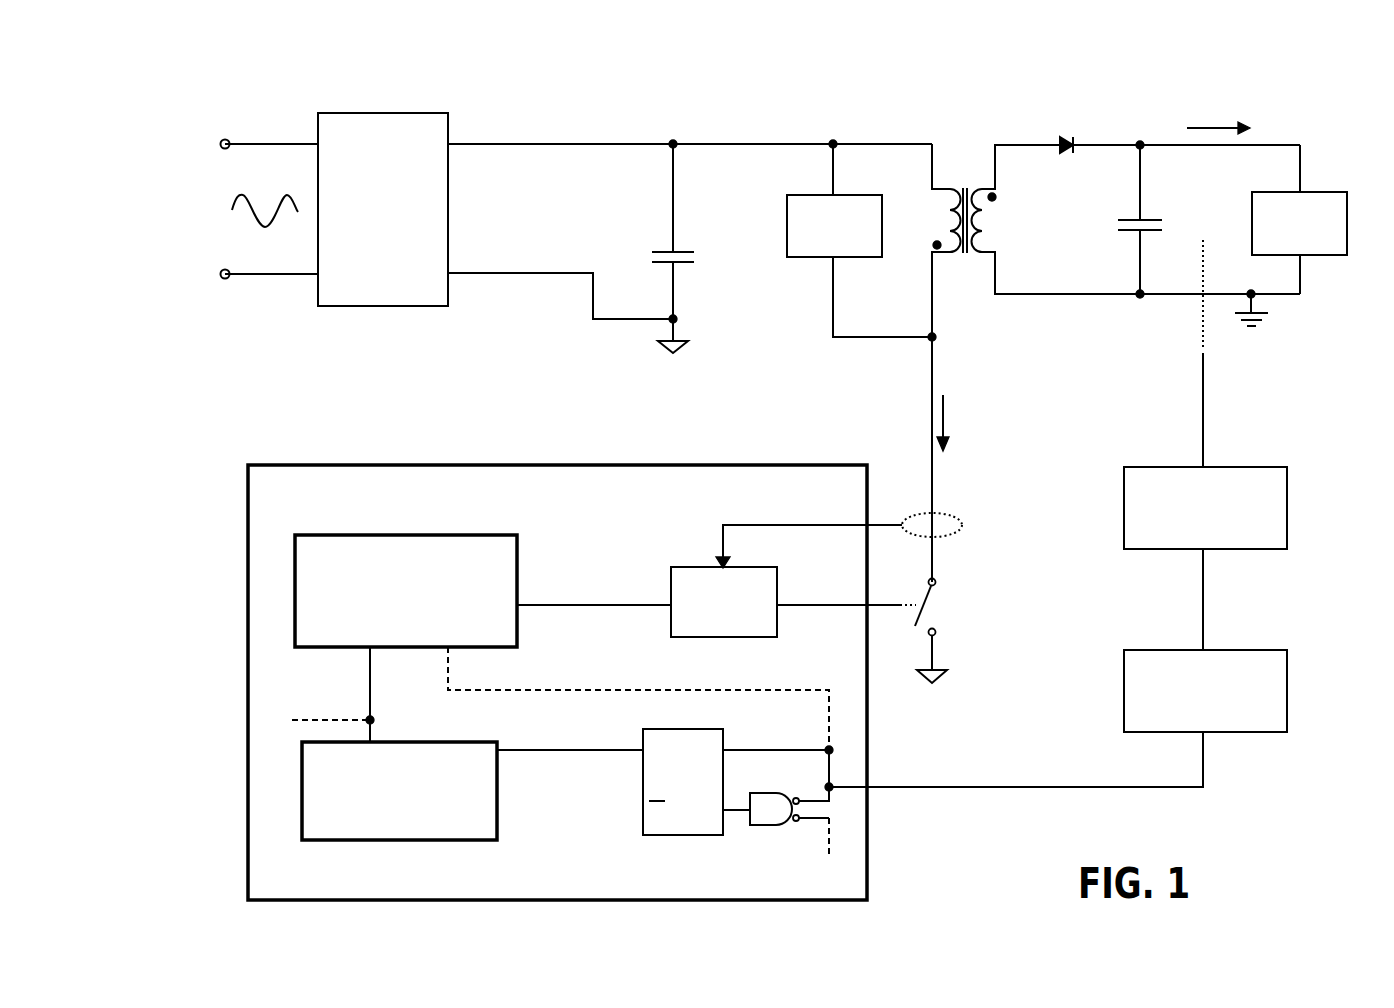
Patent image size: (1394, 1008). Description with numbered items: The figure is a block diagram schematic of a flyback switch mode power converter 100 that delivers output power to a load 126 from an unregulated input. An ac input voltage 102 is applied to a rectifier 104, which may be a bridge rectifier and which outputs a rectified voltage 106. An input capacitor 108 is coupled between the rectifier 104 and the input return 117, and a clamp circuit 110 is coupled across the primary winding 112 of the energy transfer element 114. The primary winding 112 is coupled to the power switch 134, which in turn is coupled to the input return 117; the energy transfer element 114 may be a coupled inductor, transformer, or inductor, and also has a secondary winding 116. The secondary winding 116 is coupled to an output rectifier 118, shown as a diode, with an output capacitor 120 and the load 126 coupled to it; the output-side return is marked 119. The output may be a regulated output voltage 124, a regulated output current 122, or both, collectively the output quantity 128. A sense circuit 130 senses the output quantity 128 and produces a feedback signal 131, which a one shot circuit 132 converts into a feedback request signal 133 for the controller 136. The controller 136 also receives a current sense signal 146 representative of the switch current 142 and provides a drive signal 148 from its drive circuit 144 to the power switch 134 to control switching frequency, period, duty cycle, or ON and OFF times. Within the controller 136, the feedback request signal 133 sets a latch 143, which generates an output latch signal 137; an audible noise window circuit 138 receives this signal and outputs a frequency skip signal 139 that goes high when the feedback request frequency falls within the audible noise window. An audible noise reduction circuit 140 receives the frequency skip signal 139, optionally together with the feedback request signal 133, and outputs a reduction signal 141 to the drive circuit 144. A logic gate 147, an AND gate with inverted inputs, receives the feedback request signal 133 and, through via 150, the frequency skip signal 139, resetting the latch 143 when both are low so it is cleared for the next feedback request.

The power converter 100 is at (847, 57).
The ac input voltage VAC 102 is at (200, 187).
The rectifier 104 is at (363, 105).
The rectified voltage VRECT 106 is at (518, 211).
The input capacitor CIN 108 is at (724, 241).
The clamp circuit 110 is at (850, 265).
The primary winding 112 is at (942, 222).
The energy transfer element T1 114 is at (963, 287).
The secondary winding 116 is at (993, 226).
The input return 117 is at (682, 334).
The rectifier D1 118 is at (1060, 125).
The output return 119 is at (1255, 332).
The output capacitor C1 120 is at (1108, 239).
The output current IO 122 is at (1212, 95).
The output voltage VO 124 is at (1191, 207).
The load 126 is at (1320, 187).
The output quantity UO 128 is at (1163, 398).
The sense circuit 130 is at (1290, 494).
The feedback signal UFB 131 is at (1266, 606).
The one shot circuit 132 is at (1290, 675).
The feedback request signal UFBR 133 is at (1034, 776).
The power switch S1 134 is at (970, 605).
The controller 136 is at (418, 463).
The output latch signal UL 137 is at (585, 731).
The audible noise window circuit 138 is at (500, 792).
The frequency skip signal UFS 139 is at (322, 678).
The audible noise reduction circuit 140 is at (473, 531).
The reduction signal UR 141 is at (590, 582).
The switch current ID 142 is at (962, 434).
The latch 143 is at (685, 836).
The drive circuit 144 is at (724, 638).
The current sense signal 146 is at (745, 487).
The logic gate 147 is at (779, 794).
The drive signal UD 148 is at (836, 588).
The via 150 is at (375, 719).